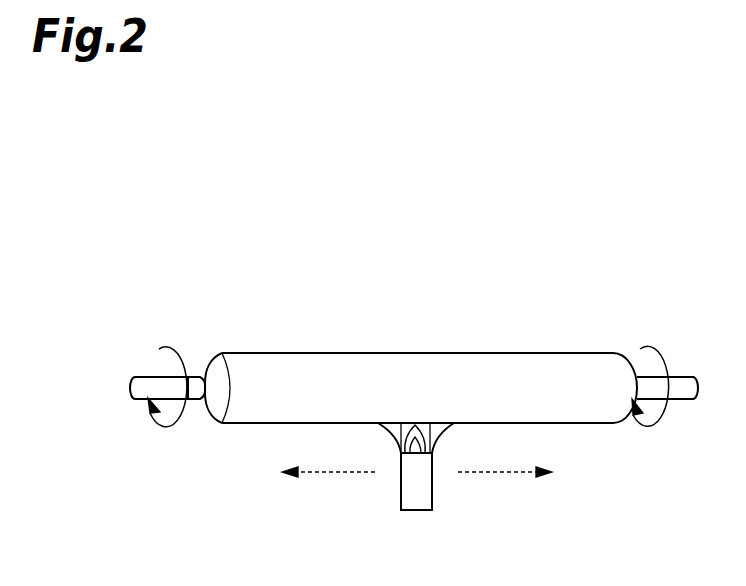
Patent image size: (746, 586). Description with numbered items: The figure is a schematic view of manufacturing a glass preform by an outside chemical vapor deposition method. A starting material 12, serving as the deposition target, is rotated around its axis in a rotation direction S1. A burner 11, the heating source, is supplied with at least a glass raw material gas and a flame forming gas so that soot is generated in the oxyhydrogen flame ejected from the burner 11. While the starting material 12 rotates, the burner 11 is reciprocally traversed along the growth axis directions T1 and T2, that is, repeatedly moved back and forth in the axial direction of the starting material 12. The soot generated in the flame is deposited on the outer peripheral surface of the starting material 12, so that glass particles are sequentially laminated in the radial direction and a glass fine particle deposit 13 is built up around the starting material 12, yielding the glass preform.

The burner 11 is at (403, 492).
The starting material 12 is at (155, 383).
The glass fine particle deposit 13 is at (462, 362).
The rotation direction S1 is at (180, 352).
The growth axis direction T1 is at (330, 473).
The growth axis direction T2 is at (500, 473).